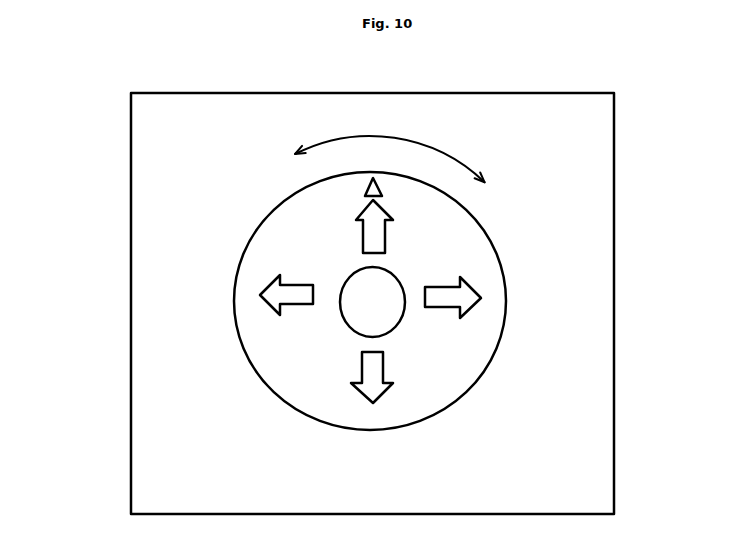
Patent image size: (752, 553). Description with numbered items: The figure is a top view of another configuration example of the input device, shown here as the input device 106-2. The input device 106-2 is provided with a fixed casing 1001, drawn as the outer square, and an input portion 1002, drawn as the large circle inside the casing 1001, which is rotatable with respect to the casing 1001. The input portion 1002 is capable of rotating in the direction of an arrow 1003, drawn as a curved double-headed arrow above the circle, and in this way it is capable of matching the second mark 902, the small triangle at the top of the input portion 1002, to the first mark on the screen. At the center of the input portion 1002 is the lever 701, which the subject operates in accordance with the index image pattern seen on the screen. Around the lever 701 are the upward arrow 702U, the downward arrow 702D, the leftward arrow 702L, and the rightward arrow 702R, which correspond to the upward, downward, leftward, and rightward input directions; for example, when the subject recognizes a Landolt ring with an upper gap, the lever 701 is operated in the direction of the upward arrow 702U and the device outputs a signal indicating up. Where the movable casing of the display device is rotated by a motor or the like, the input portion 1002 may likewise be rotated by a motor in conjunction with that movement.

The input device 106-2 is at (115, 148).
The fixed casing 1001 is at (614, 238).
The input portion 1002 is at (499, 263).
The arrow 1003 is at (453, 153).
The lever 701 is at (390, 287).
The second mark 902 is at (367, 191).
The upward arrow 702U is at (358, 221).
The downward arrow 702D is at (359, 390).
The leftward arrow 702L is at (300, 301).
The rightward arrow 702R is at (446, 301).